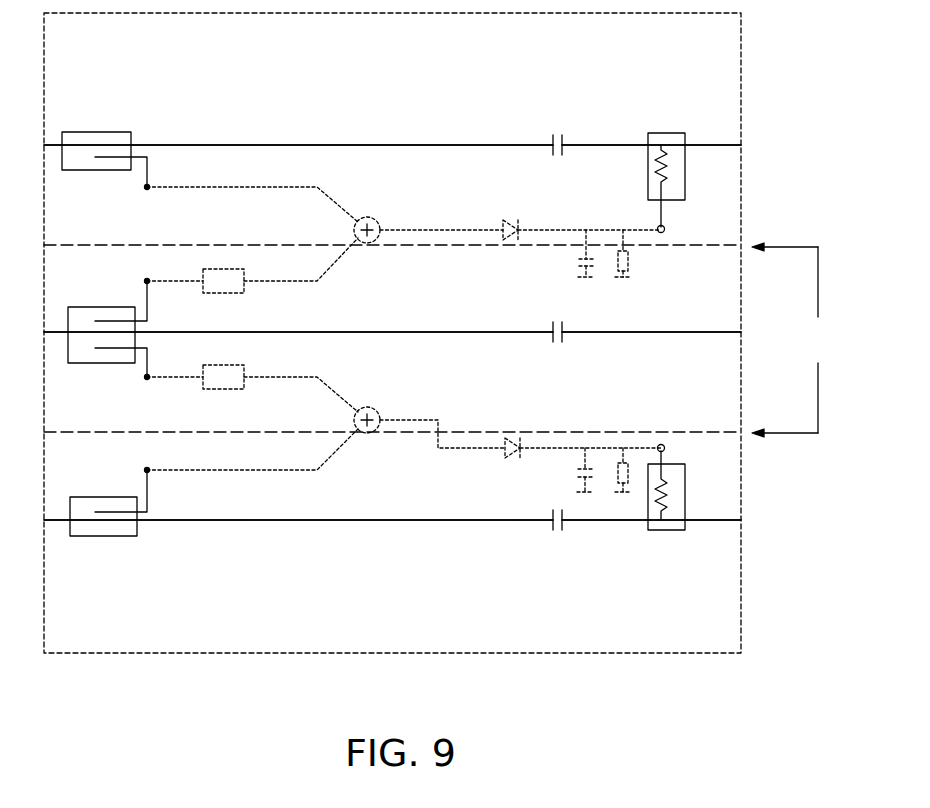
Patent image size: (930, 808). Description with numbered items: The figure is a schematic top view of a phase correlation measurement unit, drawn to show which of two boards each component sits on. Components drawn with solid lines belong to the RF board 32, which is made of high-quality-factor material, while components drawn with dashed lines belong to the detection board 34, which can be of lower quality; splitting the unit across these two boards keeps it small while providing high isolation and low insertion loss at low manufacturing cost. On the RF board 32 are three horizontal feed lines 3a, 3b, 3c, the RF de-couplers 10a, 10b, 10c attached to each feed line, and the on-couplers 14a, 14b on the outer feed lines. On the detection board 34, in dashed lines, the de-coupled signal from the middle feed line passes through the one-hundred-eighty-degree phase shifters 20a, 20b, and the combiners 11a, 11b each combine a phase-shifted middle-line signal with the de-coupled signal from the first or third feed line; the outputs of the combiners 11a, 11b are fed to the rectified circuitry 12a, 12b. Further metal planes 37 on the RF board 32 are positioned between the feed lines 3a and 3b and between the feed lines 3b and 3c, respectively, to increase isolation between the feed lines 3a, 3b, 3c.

The feed line 3a is at (722, 145).
The feed line 3b is at (722, 332).
The feed line 3c is at (722, 520).
The RF de-coupler 10a is at (100, 132).
The RF de-coupler 10b is at (100, 307).
The RF de-coupler 10c is at (100, 497).
The combiner 11a is at (378, 221).
The combiner 11b is at (378, 411).
The rectified circuitry 12a is at (574, 270).
The rectified circuitry 12b is at (576, 470).
The on-coupler 14a is at (665, 133).
The on-coupler 14b is at (672, 464).
The 180° phase shifter 20a is at (244, 269).
The 180° phase shifter 20b is at (244, 365).
The RF board 32 is at (205, 698).
The detection board 34 is at (50, 697).
The metal planes 37 is at (789, 340).